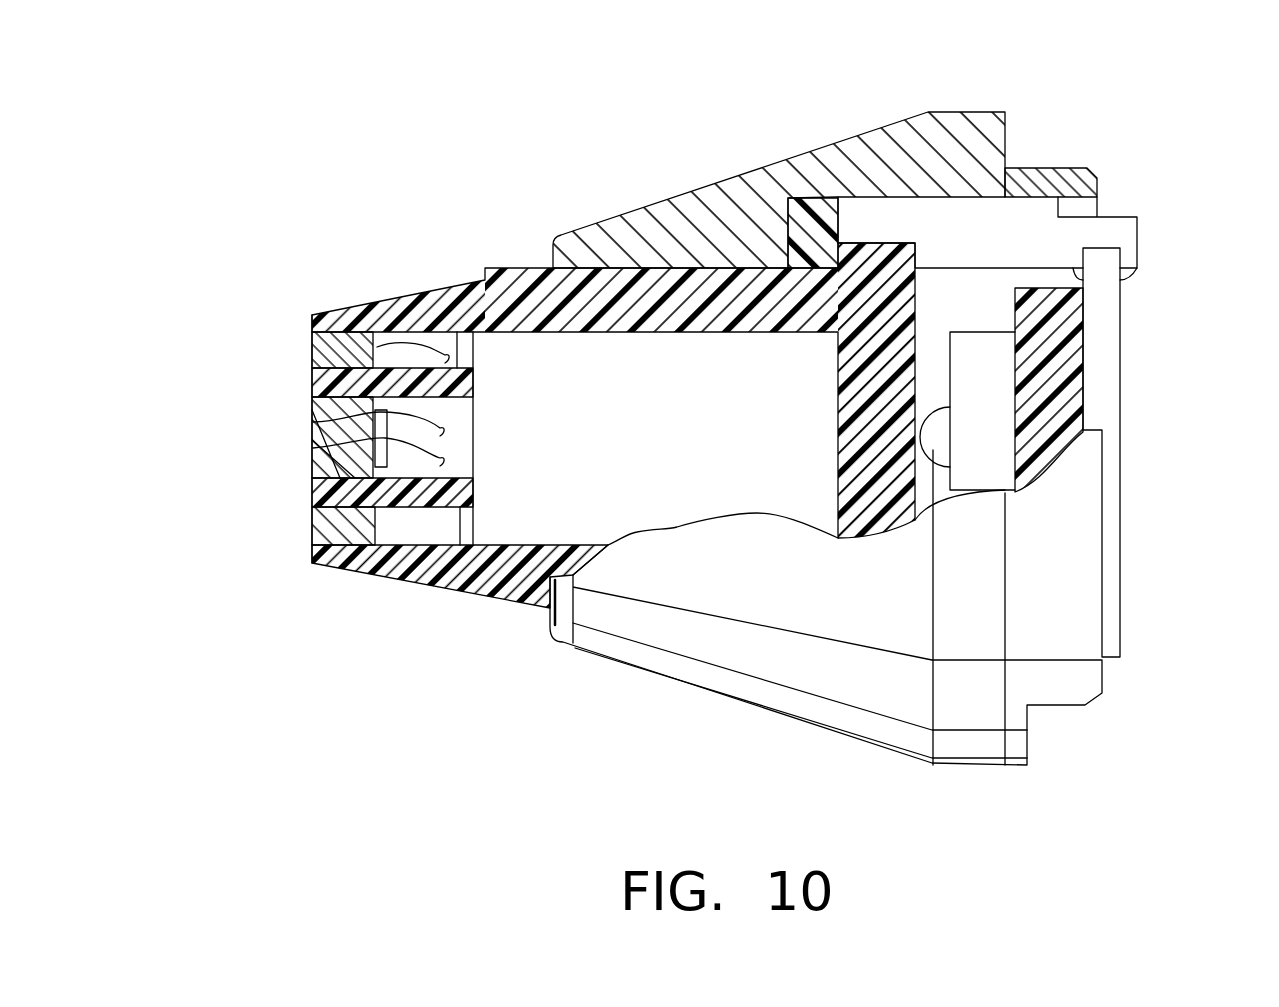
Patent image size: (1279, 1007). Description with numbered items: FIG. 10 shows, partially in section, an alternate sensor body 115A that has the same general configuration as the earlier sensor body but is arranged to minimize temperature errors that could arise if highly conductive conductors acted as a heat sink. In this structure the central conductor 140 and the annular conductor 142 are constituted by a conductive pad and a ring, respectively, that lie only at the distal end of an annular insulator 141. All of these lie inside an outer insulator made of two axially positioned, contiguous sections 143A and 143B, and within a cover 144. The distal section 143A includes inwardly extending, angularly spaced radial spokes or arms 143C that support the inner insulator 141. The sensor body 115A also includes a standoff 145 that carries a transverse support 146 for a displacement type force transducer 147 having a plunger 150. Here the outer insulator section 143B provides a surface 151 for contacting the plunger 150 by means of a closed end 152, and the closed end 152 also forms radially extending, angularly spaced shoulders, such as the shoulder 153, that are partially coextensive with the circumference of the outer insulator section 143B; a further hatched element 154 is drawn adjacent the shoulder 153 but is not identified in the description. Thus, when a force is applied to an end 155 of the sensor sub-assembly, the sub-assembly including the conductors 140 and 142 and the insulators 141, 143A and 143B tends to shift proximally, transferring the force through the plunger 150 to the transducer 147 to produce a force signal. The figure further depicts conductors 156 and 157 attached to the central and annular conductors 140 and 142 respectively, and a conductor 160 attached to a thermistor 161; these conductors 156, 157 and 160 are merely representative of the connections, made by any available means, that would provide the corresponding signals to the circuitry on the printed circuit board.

The sensor body 115A is at (589, 120).
The central conductor 140 is at (361, 442).
The annular insulator 141 is at (320, 492).
The annular conductor 142 is at (325, 522).
The distal section of outer insulator 143A is at (362, 560).
The proximal section of outer insulator 143B is at (483, 583).
The radial spokes 143C is at (454, 352).
The cover 144 is at (677, 667).
The standoff 145 is at (960, 212).
The transverse support 146 is at (1103, 332).
The displacement type force transducer 147 is at (980, 394).
The plunger 150 is at (935, 455).
The surface 151 is at (945, 492).
The closed end 152 is at (877, 483).
The shoulder 153 is at (862, 240).
The block 154 is at (804, 207).
The end of sensor sub-assembly 155 is at (323, 347).
The conductor 156 is at (375, 412).
The conductor 157 is at (409, 343).
The conductor 160 is at (318, 470).
The thermistor 161 is at (313, 422).